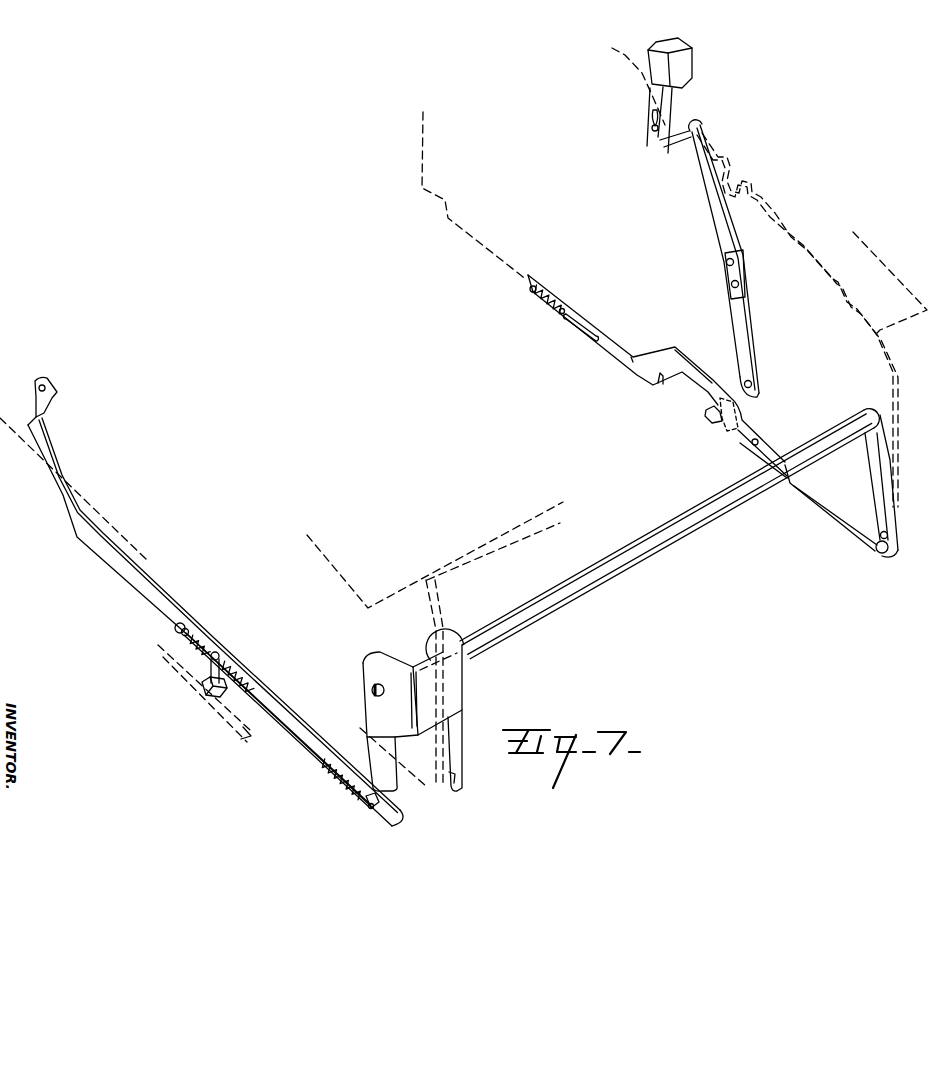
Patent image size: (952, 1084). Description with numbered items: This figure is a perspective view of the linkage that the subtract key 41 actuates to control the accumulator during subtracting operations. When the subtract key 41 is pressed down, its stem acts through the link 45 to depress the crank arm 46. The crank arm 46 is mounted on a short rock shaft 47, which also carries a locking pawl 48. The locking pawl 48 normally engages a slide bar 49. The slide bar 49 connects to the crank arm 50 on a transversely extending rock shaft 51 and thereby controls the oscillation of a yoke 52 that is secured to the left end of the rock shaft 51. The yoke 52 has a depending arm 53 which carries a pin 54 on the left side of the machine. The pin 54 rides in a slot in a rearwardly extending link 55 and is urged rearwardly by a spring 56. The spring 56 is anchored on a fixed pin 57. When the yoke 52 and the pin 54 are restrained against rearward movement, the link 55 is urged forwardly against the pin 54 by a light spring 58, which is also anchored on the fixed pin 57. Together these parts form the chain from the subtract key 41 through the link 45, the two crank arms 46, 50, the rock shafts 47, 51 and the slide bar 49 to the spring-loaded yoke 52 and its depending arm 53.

The subtract key 41 is at (690, 62).
The link 45 is at (727, 277).
The crank arm 46 is at (747, 401).
The rock shaft 47 is at (712, 400).
The locking pawl 48 is at (722, 428).
The slide bar 49 is at (818, 507).
The crank arm 50 is at (878, 463).
The rock shaft 51 is at (664, 549).
The yoke 52 is at (462, 690).
The depending arm 53 is at (395, 782).
The pin 54 is at (369, 806).
The link 55 is at (158, 591).
The spring 56 is at (287, 742).
The fixed pin 57 is at (210, 674).
The light spring 58 is at (178, 635).